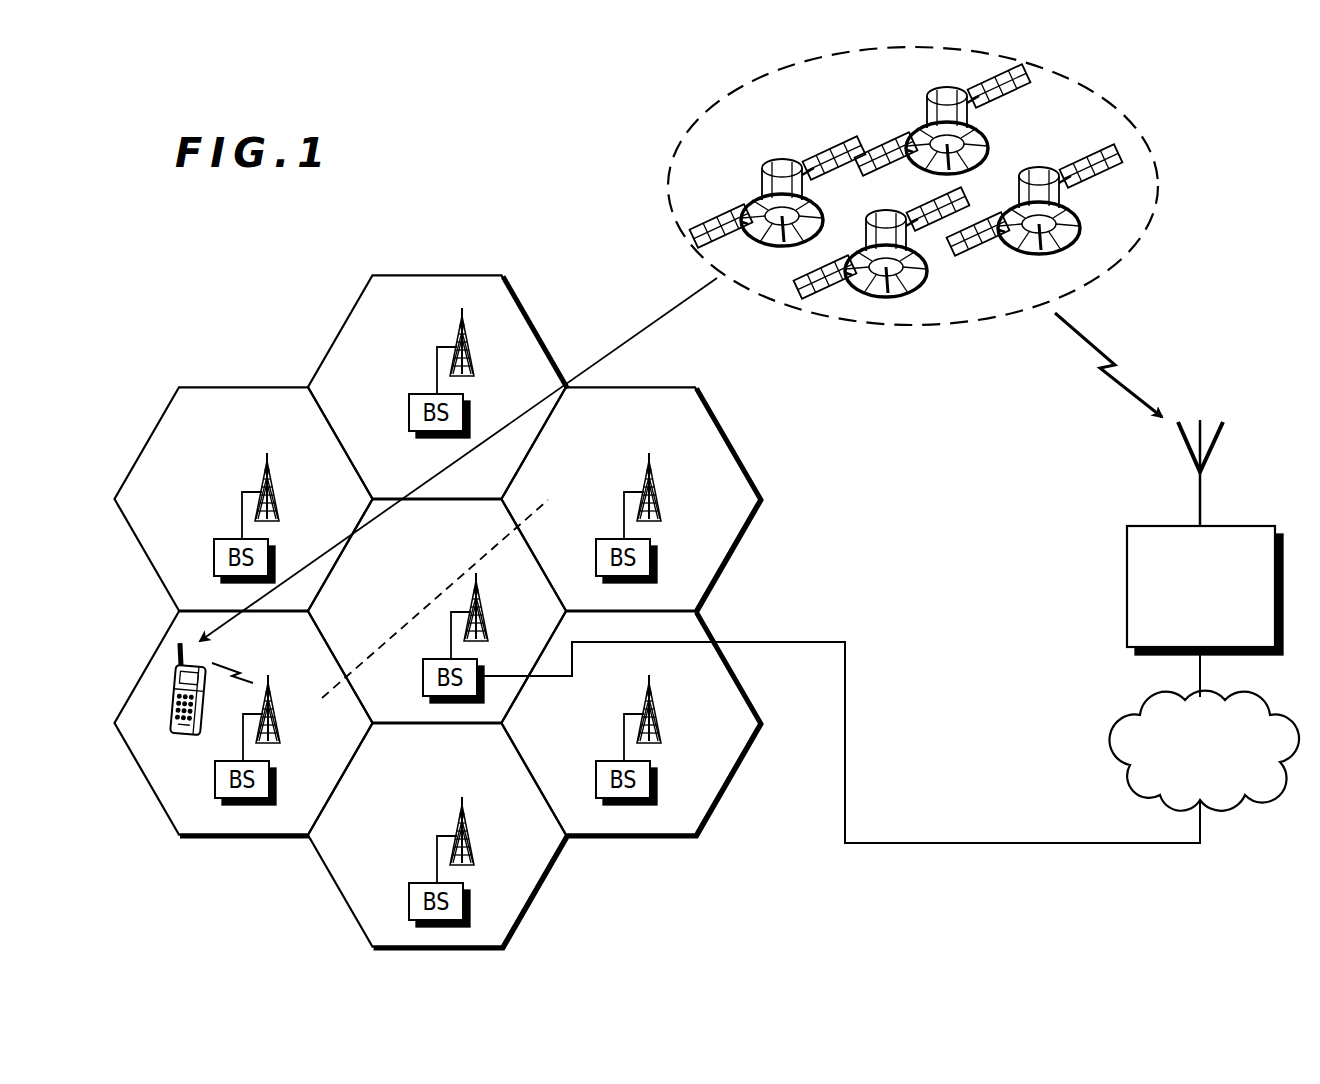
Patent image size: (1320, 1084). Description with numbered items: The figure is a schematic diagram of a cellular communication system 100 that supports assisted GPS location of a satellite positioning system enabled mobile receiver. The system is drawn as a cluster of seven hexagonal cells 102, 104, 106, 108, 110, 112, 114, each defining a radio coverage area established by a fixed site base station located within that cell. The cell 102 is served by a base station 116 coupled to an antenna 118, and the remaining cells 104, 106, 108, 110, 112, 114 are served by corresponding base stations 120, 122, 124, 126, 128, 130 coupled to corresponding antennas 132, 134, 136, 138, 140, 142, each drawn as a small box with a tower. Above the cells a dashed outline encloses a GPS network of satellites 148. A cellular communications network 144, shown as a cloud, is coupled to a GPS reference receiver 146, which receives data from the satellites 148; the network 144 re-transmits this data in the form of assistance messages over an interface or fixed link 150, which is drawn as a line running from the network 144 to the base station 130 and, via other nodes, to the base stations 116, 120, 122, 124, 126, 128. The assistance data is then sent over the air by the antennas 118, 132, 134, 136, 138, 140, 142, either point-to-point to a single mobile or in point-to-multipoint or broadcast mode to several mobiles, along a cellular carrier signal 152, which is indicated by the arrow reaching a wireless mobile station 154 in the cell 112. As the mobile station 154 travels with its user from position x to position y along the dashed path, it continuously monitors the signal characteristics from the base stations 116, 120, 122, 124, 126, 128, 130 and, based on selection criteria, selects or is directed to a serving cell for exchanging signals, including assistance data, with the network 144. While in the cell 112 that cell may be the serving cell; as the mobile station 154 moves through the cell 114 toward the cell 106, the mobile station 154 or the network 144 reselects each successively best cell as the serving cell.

The cellular communication system 100 is at (493, 189).
The cell 102 is at (239, 449).
The cell 104 is at (424, 318).
The cell 106 is at (621, 448).
The cell 108 is at (633, 683).
The cell 110 is at (434, 791).
The cell 112 is at (314, 651).
The cell 114 is at (424, 581).
The base station 116 is at (215, 554).
The antenna 118 is at (279, 493).
The base station 120 is at (408, 412).
The base station 122 is at (596, 554).
The base station 124 is at (597, 777).
The base station 126 is at (409, 899).
The base station 128 is at (270, 791).
The base station 130 is at (422, 673).
The antenna 132 is at (472, 352).
The antenna 134 is at (661, 493).
The antenna 136 is at (662, 715).
The antenna 138 is at (475, 836).
The antenna 140 is at (279, 711).
The antenna 142 is at (488, 613).
The cellular communications network 144 is at (1127, 733).
The GPS reference receiver 146 is at (1127, 590).
The GPS network of satellites 148 is at (1108, 105).
The fixed link 150 is at (947, 843).
The cellular carrier signal 152 is at (240, 674).
The wireless mobile station 154 is at (190, 740).